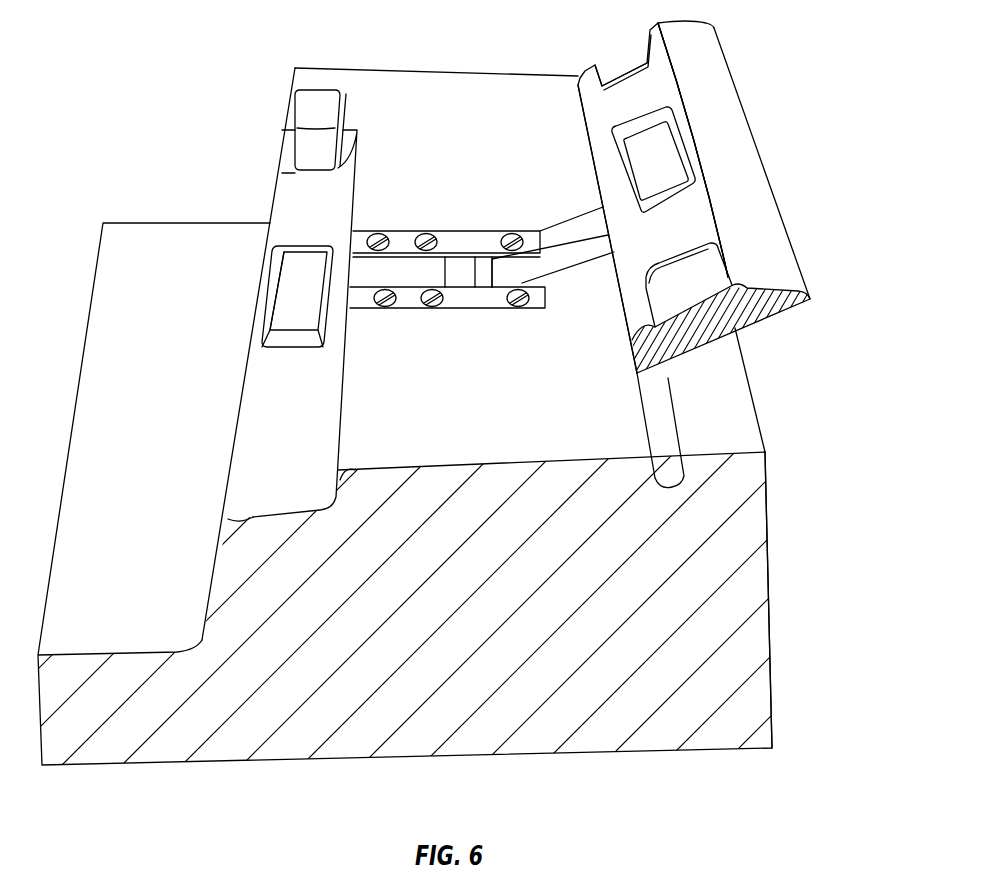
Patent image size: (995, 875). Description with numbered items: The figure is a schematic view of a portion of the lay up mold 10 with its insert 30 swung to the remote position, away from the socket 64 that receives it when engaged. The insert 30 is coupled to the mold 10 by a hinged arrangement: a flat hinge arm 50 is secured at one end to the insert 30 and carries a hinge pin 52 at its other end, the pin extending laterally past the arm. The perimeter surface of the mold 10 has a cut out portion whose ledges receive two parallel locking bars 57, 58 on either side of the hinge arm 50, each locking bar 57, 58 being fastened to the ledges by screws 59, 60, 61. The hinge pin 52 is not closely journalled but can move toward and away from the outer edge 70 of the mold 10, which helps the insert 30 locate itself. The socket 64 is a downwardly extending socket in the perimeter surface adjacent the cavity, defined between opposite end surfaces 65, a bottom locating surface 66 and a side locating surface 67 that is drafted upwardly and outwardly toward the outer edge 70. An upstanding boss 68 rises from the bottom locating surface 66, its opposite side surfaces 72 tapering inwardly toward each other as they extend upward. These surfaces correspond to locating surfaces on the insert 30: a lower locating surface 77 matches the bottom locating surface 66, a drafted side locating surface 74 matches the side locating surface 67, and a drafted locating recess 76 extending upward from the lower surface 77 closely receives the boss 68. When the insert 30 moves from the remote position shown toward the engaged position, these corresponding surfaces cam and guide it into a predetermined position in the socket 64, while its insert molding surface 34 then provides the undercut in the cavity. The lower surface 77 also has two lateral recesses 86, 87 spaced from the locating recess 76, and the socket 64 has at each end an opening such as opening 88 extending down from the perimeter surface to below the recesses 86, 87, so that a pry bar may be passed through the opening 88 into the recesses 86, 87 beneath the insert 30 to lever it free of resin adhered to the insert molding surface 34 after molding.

The lay up mold 10 is at (357, 716).
The insert 30 is at (569, 56).
The insert molding surface 34 is at (785, 248).
The hinge arm 50 is at (564, 248).
The hinge pin 52 is at (484, 283).
The locking bar 57 is at (416, 231).
The locking bar 58 is at (409, 310).
The screw 59 is at (378, 232).
The screw 60 is at (445, 232).
The screw 61 is at (514, 232).
The socket 64 is at (276, 389).
The end surface 65 is at (347, 132).
The bottom locating surface 66 is at (222, 527).
The side locating surface 67 is at (353, 470).
The upstanding boss 68 is at (282, 290).
The outer edge 70 is at (768, 441).
The side surface 72 is at (287, 340).
The side locating surface 74 is at (634, 353).
The locating recess 76 is at (659, 165).
The lower locating surface 77 is at (655, 92).
The lateral recess 86 is at (637, 53).
The lateral recess 87 is at (678, 290).
The opening 88 is at (313, 107).